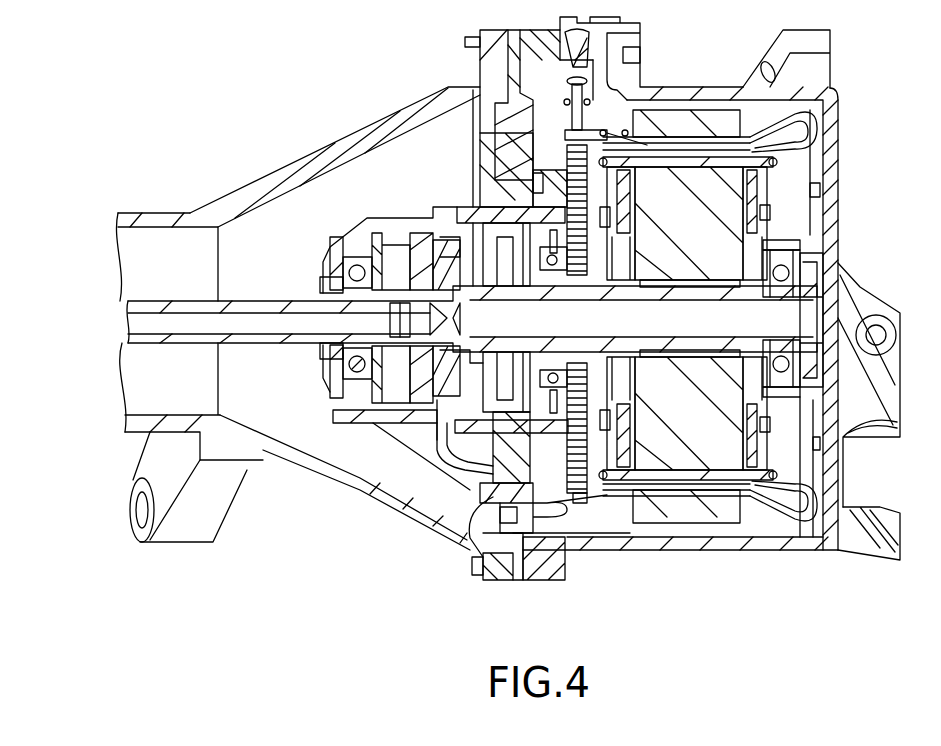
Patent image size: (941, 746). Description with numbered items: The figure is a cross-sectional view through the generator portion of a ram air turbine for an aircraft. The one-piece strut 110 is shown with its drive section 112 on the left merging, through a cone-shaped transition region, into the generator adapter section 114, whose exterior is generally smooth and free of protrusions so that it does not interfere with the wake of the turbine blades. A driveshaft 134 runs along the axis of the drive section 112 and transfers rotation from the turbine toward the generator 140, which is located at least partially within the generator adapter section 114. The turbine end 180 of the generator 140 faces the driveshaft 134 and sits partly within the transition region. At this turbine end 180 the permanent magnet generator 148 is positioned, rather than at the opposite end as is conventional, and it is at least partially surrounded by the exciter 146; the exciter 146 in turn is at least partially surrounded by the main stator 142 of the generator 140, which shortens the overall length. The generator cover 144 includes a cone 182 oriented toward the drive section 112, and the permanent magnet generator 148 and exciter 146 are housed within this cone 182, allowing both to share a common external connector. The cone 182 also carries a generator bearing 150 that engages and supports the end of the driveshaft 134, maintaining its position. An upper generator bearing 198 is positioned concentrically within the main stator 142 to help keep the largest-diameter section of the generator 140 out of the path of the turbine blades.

The strut 110 is at (206, 178).
The drive section 112 is at (150, 213).
The generator adapter section 114 is at (259, 180).
The driveshaft 134 is at (132, 327).
The generator 140 is at (710, 538).
The main stator 142 is at (700, 118).
The generator cover 144 is at (477, 557).
The exciter 146 is at (500, 170).
The permanent magnet generator 148 is at (367, 219).
The generator bearing 150 is at (342, 374).
The turbine end 180 is at (391, 203).
The cone 182 is at (390, 440).
The upper generator bearing 198 is at (791, 264).